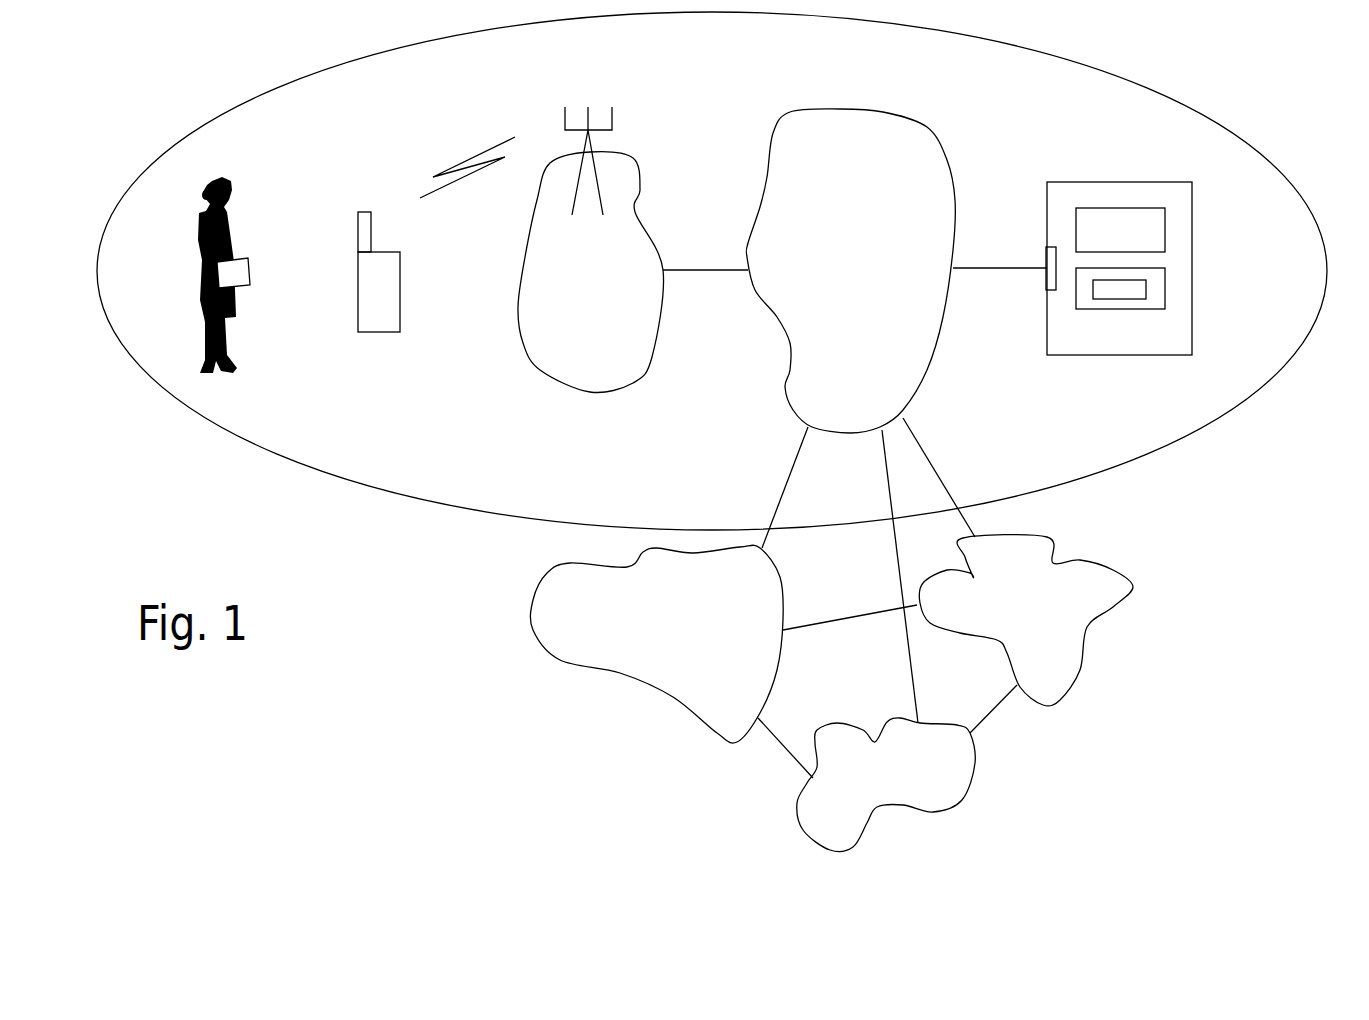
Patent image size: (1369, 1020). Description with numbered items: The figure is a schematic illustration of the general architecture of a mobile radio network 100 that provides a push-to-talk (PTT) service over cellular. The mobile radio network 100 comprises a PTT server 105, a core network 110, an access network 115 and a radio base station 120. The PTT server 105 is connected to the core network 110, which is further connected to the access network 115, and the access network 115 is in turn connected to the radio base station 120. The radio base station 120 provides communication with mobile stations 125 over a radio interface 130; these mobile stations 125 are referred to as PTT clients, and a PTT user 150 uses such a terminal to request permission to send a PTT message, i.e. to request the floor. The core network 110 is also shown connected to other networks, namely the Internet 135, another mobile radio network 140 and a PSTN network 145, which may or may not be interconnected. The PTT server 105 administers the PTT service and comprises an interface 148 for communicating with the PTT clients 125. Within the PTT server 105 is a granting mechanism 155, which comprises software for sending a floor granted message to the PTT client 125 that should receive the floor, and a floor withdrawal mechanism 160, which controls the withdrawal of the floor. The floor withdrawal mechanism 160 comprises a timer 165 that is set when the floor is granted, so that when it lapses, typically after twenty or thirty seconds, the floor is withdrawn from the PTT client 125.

The mobile radio network 100 is at (503, 490).
The PTT server 105 is at (1122, 298).
The core network 110 is at (855, 110).
The access network 115 is at (625, 390).
The radio base station 120 is at (588, 187).
The mobile station 125 is at (377, 333).
The radio interface 130 is at (457, 163).
The Internet 135 is at (1030, 641).
The other mobile radio network 140 is at (656, 644).
The PSTN network 145 is at (886, 797).
The interface 148 is at (1046, 278).
The PTT user 150 is at (232, 233).
The granting mechanism 155 is at (1120, 230).
The floor withdrawal mechanism 160 is at (1165, 302).
The timer 165 is at (1148, 287).